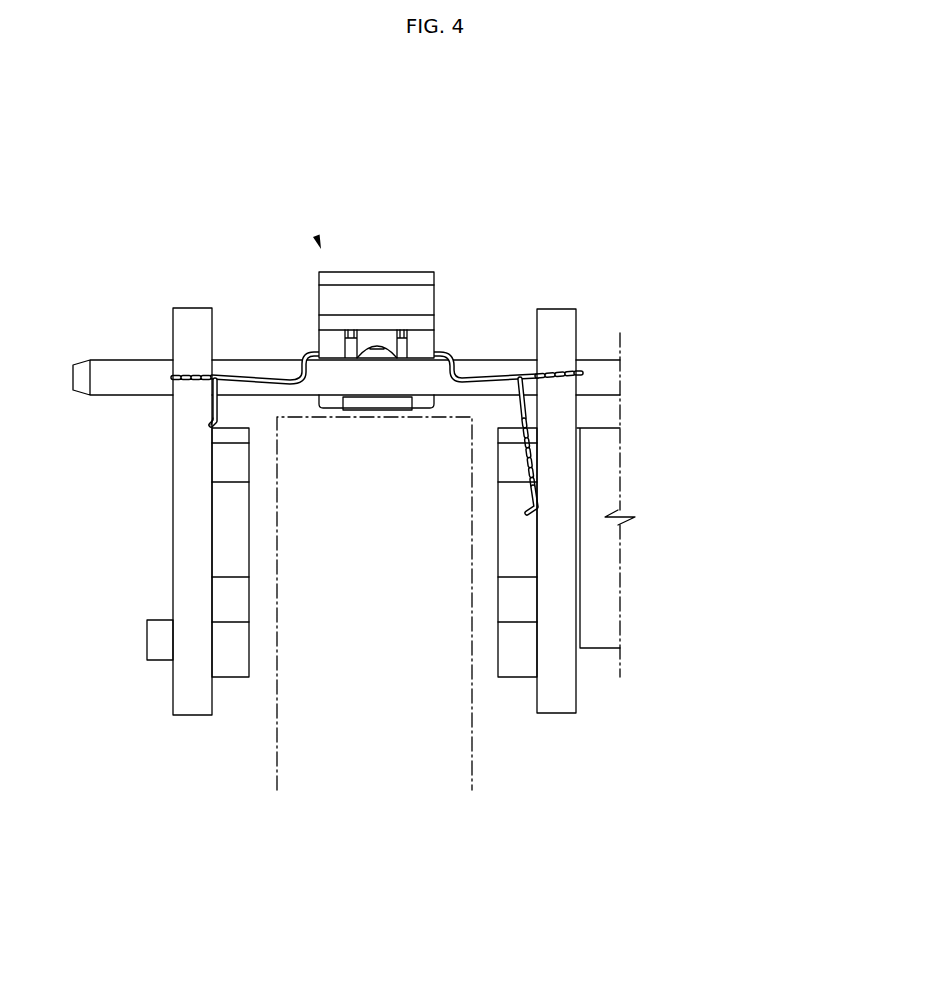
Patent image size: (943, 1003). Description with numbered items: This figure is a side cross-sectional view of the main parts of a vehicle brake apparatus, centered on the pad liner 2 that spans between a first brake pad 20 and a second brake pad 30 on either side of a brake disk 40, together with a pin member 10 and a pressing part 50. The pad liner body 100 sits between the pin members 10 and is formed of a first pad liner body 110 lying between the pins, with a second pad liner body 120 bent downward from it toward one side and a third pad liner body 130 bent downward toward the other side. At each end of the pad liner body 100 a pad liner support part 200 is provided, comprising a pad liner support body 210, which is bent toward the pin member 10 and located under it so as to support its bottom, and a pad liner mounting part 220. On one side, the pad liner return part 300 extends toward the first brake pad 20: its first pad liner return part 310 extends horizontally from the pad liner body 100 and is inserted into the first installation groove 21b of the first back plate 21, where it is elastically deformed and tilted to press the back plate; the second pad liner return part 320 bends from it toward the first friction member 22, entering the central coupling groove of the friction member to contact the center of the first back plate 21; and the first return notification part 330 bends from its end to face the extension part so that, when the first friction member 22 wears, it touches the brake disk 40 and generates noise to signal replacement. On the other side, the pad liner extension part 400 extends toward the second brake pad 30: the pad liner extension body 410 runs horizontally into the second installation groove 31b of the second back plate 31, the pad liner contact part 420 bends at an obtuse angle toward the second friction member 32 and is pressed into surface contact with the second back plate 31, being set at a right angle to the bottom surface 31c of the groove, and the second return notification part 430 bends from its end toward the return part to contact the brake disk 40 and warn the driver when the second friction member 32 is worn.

The pad liner 2 is at (318, 240).
The pin member 10 is at (597, 377).
The first brake pad 20 is at (555, 536).
The first back plate 21 is at (575, 513).
The first installation groove 21b is at (552, 330).
The first friction member 22 is at (522, 670).
The second brake pad 30 is at (140, 500).
The second back plate 31 is at (142, 500).
The second installation groove 31b is at (183, 327).
The bottom surface 31c is at (185, 377).
The second friction member 32 is at (220, 595).
The brake disk 40 is at (277, 777).
The pressing part 50 is at (602, 602).
The pad liner body 100 is at (393, 377).
The first pad liner body 110 is at (437, 348).
The second pad liner body 120 is at (462, 376).
The third pad liner body 130 is at (300, 350).
The pad liner support part 200 is at (377, 268).
The pad liner support body 210 is at (390, 285).
The pad liner mounting part 220 is at (372, 340).
The pad liner return part 300 is at (679, 467).
The first pad liner return part 310 is at (537, 383).
The second pad liner return part 320 is at (540, 425).
The first return notification part 330 is at (537, 517).
The pad liner extension part 400 is at (343, 340).
The pad liner extension body 410 is at (268, 376).
The pad liner contact part 420 is at (216, 403).
The second return notification part 430 is at (215, 420).